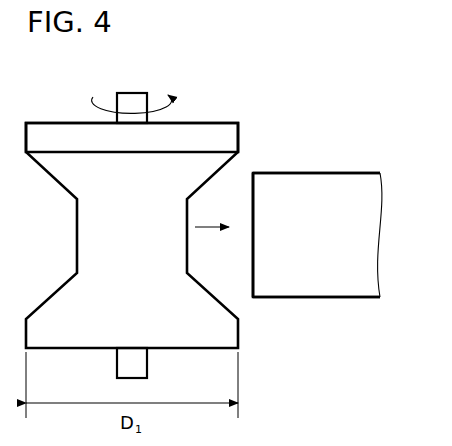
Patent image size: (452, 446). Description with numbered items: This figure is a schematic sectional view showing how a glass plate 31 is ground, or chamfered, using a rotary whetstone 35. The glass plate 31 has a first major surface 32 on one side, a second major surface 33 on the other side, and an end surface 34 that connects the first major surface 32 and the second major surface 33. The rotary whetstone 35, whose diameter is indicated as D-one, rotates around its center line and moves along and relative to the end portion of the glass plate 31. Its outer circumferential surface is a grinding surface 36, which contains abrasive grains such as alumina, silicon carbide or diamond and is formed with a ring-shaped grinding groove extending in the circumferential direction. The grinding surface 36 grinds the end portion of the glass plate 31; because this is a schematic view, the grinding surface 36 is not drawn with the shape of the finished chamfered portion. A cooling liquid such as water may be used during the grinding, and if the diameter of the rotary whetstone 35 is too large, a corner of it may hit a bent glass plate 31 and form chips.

The glass plate 31 is at (317, 187).
The first major surface 32 is at (357, 173).
The second major surface 33 is at (354, 300).
The end surface 34 is at (251, 272).
The rotary whetstone 35 is at (73, 164).
The grinding surface 36 is at (220, 172).